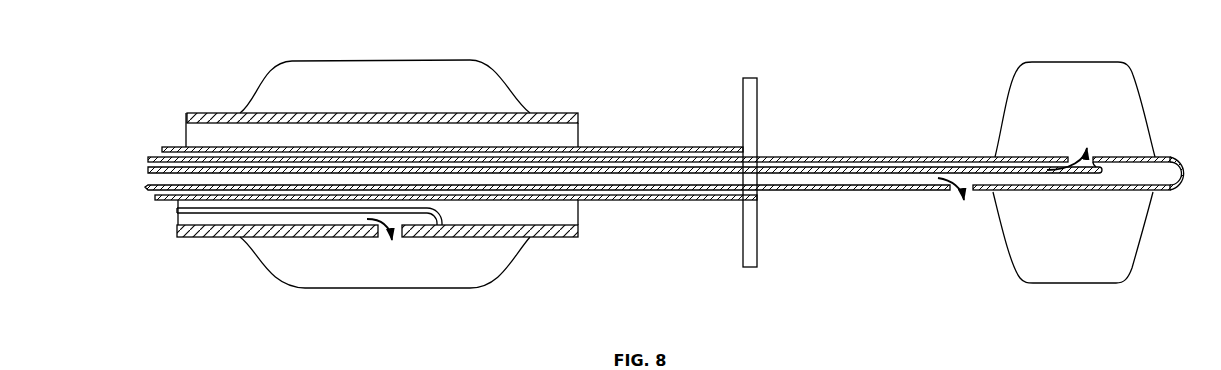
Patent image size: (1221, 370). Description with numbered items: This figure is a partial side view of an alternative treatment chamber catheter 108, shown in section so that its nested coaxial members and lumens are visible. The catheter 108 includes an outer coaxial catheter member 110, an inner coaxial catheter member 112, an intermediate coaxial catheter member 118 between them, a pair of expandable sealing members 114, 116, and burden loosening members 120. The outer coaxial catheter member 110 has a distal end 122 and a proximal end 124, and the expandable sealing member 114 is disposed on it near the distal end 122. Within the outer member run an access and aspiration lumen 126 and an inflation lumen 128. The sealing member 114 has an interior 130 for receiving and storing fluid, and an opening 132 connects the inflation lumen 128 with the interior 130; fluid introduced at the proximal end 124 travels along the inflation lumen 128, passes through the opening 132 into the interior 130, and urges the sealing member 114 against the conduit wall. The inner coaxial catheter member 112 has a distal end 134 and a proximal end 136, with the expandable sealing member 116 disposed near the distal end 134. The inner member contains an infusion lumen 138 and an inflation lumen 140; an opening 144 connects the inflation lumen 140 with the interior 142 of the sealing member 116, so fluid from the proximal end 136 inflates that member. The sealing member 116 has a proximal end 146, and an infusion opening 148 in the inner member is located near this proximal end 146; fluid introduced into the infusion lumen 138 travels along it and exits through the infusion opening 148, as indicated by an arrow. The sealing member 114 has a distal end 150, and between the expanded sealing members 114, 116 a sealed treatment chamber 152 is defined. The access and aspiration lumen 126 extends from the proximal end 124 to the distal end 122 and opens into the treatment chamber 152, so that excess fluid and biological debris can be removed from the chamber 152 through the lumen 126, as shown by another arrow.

The alternative treatment chamber catheter 108 is at (535, 290).
The outer coaxial catheter member 110 is at (547, 113).
The inner coaxial catheter member 112 is at (871, 157).
The expandable sealing member 114 is at (440, 60).
The expandable sealing member 116 is at (1062, 61).
The intermediate coaxial catheter member 118 is at (710, 147).
The burden loosening members 120 is at (748, 107).
The distal end 122 is at (580, 118).
The proximal end 124 is at (186, 118).
The access and aspiration lumen 126 is at (557, 137).
The inflation lumen 128 is at (178, 218).
The interior 130 is at (287, 92).
The opening 132 is at (400, 230).
The distal end 134 is at (1186, 162).
The proximal end 136 is at (148, 164).
The infusion lumen 138 is at (820, 178).
The inflation lumen 140 is at (777, 163).
The interior 142 is at (1113, 88).
The opening 144 is at (1091, 140).
The proximal end 146 is at (993, 193).
The infusion opening 148 is at (953, 200).
The distal end 150 is at (533, 113).
The sealed treatment chamber 152 is at (927, 259).